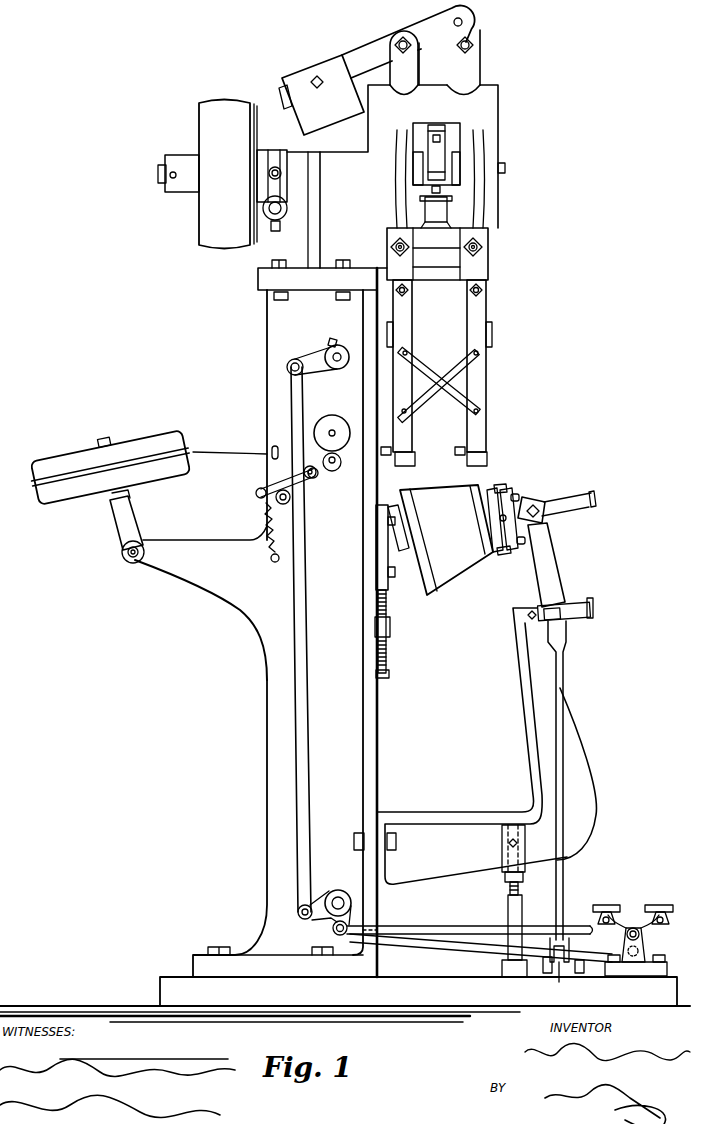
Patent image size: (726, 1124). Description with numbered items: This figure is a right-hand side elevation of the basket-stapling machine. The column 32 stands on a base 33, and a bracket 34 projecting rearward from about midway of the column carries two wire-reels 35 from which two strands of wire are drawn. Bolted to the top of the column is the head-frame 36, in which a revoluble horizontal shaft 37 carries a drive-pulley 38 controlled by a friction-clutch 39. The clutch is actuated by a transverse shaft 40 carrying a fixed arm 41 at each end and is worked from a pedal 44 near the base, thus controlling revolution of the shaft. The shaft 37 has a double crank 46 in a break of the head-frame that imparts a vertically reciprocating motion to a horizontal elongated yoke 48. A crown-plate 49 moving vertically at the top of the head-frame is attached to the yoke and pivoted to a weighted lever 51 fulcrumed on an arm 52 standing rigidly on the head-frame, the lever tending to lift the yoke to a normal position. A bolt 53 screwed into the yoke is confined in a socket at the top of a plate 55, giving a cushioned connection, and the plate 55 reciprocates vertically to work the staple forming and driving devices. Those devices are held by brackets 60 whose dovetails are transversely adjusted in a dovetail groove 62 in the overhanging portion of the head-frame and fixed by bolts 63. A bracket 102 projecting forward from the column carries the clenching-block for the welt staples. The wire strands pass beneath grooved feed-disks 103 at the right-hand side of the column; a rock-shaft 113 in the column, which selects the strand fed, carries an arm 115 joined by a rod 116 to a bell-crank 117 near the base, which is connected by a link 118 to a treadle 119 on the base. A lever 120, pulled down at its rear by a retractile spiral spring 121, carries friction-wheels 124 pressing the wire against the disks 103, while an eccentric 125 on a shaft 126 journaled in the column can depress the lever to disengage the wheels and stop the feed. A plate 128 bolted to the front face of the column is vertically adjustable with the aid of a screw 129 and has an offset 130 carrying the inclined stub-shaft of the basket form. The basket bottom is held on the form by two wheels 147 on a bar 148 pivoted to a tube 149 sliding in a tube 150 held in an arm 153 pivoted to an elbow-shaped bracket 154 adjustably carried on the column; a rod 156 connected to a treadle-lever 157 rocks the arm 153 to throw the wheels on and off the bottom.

The column 32 is at (294, 618).
The base 33 is at (418, 991).
The bracket 34 is at (194, 603).
The wire-reels 35 is at (164, 470).
The head-frame 36 is at (392, 176).
The shaft 37 is at (504, 168).
The drive-pulley 38 is at (207, 174).
The friction-clutch 39 is at (260, 150).
The shaft 40 is at (282, 214).
The arm 41 is at (282, 188).
The pedal 44 is at (574, 915).
The double crank 46 is at (453, 162).
The yoke 48 is at (433, 157).
The crown-plate 49 is at (449, 62).
The weighted lever 51 is at (358, 53).
The arm 52 is at (404, 63).
The bolt 53 is at (431, 192).
The plate 55 is at (457, 218).
The brackets 60 is at (480, 262).
The dovetail groove 62 is at (452, 262).
The bolts 63 is at (392, 245).
The bracket 102 is at (380, 491).
The feed-disks 103 is at (328, 422).
The rock-shaft 113 is at (337, 370).
The arm 115 is at (309, 356).
The rod 116 is at (306, 662).
The bell-crank lever 117 is at (322, 902).
The link 118 is at (450, 943).
The treadle 119 is at (641, 912).
The lever 120 is at (256, 491).
The retractile spiral spring 121 is at (265, 525).
The friction-wheels 124 is at (332, 472).
The eccentric 125 is at (291, 499).
The shaft 126 is at (312, 463).
The plate 128 is at (374, 546).
The screw 129 is at (388, 666).
The offset 130 is at (407, 560).
The wheels 147 is at (503, 488).
The bar 148 is at (517, 551).
The tube 149 is at (522, 505).
The tube 150 is at (560, 500).
The arm 153 is at (560, 585).
The elbow-shaped bracket 154 is at (486, 792).
The rod 156 is at (560, 737).
The treadle-lever 157 is at (563, 968).